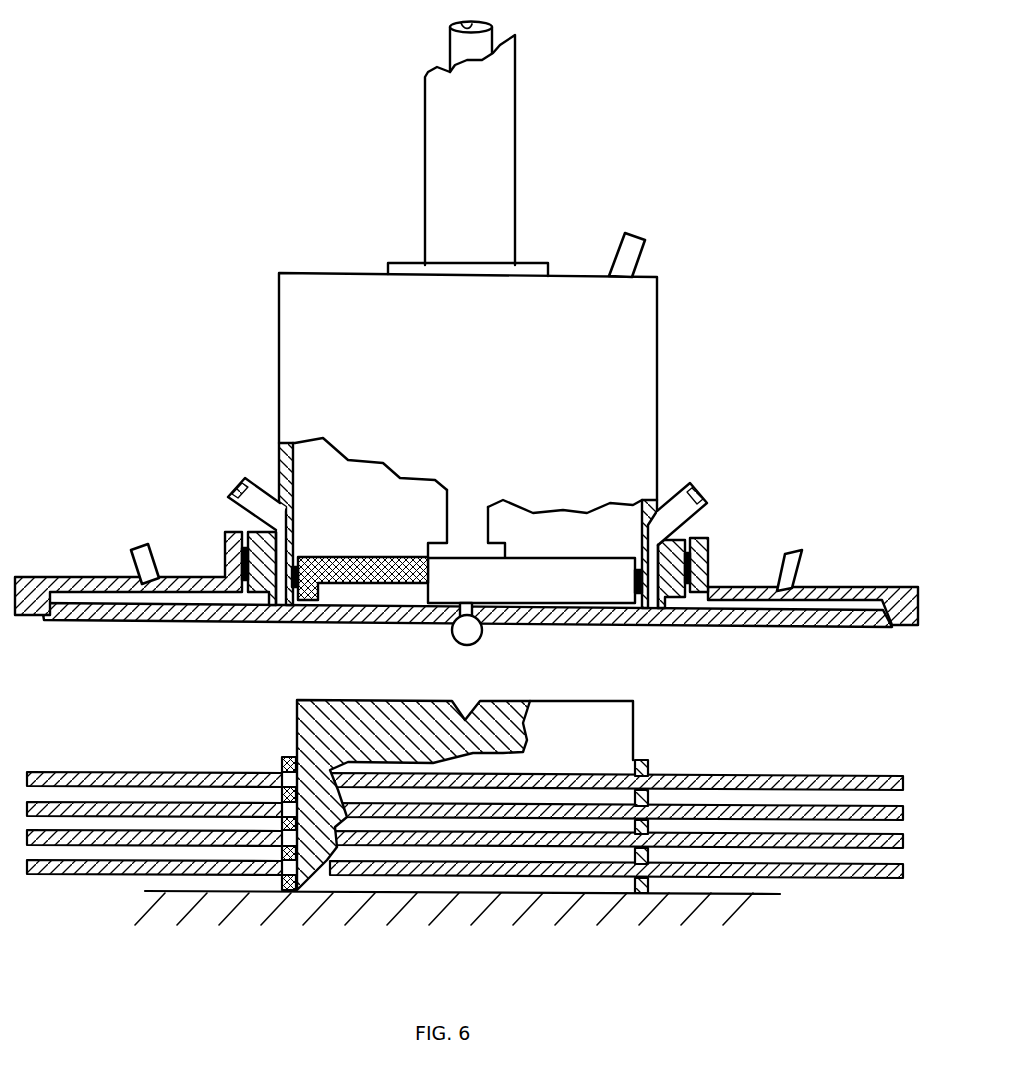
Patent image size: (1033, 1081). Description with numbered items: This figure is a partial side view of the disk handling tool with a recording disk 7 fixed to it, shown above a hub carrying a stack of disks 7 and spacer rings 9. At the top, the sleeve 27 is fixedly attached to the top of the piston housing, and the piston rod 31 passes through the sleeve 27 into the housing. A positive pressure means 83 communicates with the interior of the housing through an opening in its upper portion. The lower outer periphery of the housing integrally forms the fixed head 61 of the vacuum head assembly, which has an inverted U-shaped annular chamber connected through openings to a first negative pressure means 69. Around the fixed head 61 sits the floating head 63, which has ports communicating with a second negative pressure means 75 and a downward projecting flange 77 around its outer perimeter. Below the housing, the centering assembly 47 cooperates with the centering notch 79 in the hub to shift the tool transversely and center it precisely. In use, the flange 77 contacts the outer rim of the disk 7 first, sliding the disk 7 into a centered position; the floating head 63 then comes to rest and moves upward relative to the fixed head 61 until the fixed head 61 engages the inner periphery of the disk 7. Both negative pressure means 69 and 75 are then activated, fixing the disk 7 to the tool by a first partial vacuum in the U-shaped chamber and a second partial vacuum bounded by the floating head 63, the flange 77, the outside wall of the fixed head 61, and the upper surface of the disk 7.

The recording disk 7 is at (735, 626).
The spacer ring 9 is at (640, 758).
The sleeve 27 is at (515, 135).
The piston rod 31 is at (445, 515).
The centering assembly 47 is at (463, 657).
The fixed head 61 is at (240, 533).
The floating head 63 is at (193, 578).
The first negative pressure means 69 is at (238, 483).
The second negative pressure means 75 is at (138, 545).
The flange 77 is at (892, 627).
The centering notch 79 is at (465, 707).
The positive pressure means 83 is at (637, 233).